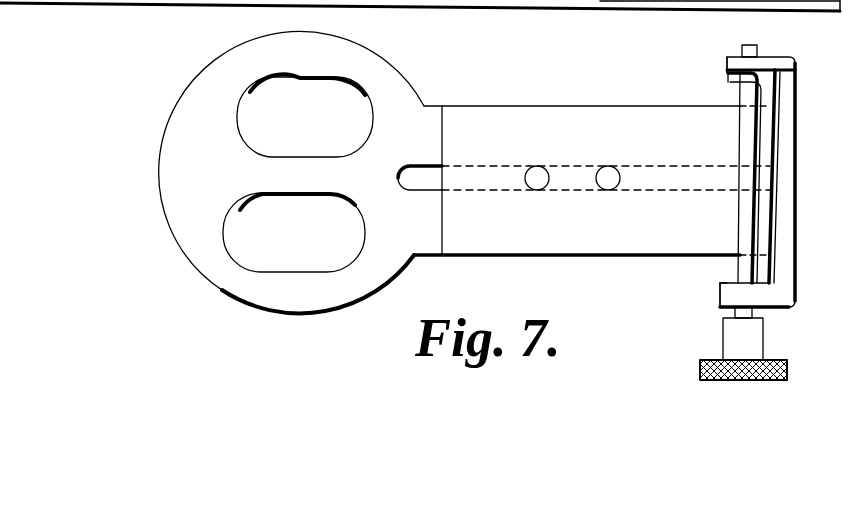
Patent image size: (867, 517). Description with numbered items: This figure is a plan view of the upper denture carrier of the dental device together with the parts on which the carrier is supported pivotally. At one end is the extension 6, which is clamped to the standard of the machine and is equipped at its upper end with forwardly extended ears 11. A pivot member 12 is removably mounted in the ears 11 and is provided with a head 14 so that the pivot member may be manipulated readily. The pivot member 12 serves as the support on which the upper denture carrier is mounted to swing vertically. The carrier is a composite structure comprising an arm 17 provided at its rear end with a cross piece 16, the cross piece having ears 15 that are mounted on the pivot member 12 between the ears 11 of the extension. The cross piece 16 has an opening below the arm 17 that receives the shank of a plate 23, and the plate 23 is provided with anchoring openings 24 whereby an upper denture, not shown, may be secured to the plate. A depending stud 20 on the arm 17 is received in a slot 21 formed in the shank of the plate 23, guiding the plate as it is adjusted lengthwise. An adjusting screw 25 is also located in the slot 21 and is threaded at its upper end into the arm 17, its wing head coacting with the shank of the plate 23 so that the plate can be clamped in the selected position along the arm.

The extension 6 is at (793, 110).
The ears 11 is at (763, 65).
The pivot member 12 is at (743, 97).
The head 14 is at (752, 382).
The ears 15 is at (737, 73).
The cross piece 16 is at (765, 155).
The arm 17 is at (617, 120).
The depending stud 20 is at (608, 190).
The slot 21 is at (425, 182).
The plate 23 is at (176, 197).
The anchoring openings 24 is at (267, 97).
The adjusting screw 25 is at (537, 166).